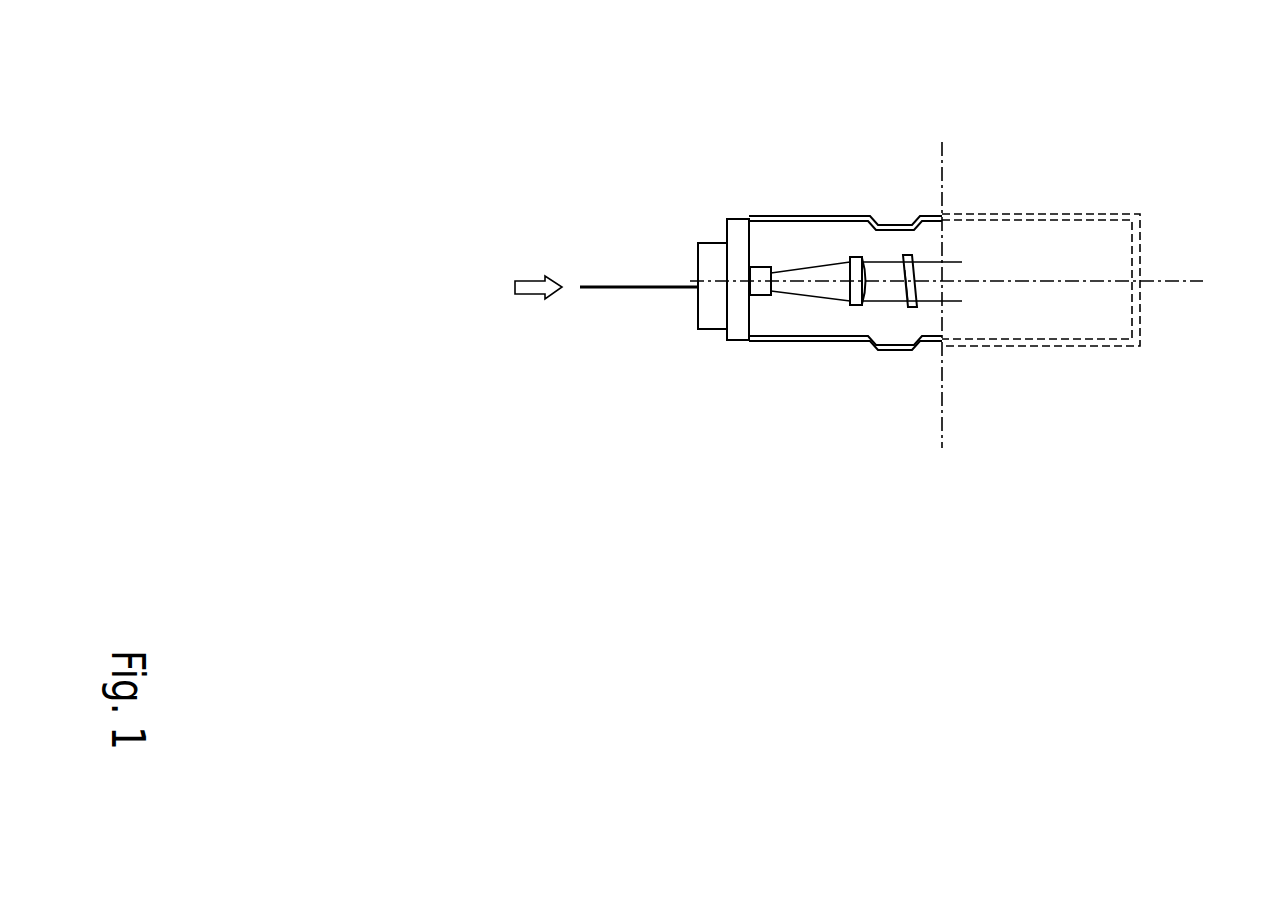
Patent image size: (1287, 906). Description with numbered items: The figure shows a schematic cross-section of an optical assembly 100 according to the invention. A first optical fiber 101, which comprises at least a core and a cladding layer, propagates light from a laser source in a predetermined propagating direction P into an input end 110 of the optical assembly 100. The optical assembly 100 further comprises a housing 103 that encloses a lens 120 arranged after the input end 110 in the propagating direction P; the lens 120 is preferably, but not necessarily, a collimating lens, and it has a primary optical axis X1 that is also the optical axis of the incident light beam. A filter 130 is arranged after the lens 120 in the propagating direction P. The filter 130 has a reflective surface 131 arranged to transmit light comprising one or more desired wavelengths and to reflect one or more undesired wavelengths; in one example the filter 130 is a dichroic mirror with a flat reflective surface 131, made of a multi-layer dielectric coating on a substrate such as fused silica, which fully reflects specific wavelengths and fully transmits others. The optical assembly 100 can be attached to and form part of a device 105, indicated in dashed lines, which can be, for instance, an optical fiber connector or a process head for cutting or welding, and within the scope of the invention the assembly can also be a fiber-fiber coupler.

The optical assembly 100 is at (763, 170).
The first optical fiber 101 is at (616, 285).
The housing 103 is at (840, 218).
The device 105 is at (1120, 155).
The input end 110 is at (697, 345).
The lens 120 is at (840, 320).
The filter 130 is at (916, 325).
The reflective surface 131 is at (905, 290).
The propagating direction P is at (546, 295).
The primary optical axis X1 is at (1168, 280).